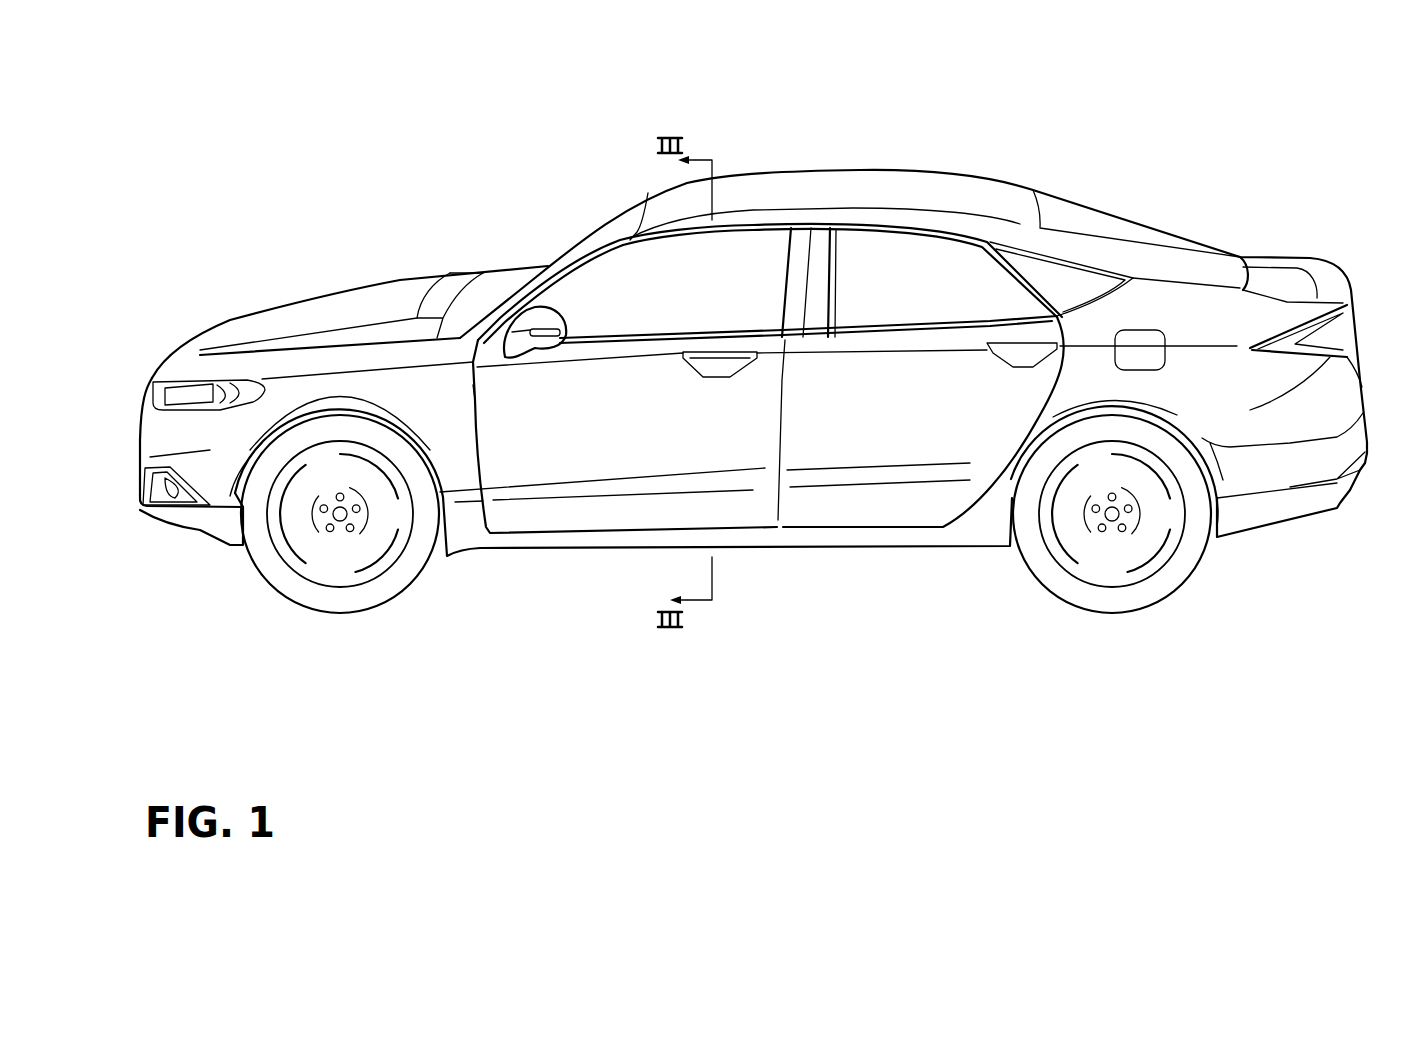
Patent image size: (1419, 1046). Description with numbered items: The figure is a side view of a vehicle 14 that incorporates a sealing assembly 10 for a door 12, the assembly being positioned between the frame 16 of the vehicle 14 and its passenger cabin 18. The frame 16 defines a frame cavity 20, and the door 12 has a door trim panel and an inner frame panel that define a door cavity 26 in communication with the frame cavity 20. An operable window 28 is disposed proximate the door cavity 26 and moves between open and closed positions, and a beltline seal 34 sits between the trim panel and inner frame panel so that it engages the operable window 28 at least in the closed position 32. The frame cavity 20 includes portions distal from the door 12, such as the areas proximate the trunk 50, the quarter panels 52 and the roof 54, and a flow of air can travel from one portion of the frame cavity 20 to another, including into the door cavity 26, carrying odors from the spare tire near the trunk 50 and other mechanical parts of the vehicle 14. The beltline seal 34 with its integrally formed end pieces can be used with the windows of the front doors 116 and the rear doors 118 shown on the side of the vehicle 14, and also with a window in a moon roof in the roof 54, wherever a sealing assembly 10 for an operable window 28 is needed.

The sealing assembly 10 is at (732, 322).
The door 12 is at (577, 503).
The vehicle 14 is at (1100, 190).
The frame 16 is at (1247, 470).
The passenger cabin 18 is at (683, 263).
The frame cavity 20 is at (1200, 333).
The door cavity 26 is at (537, 439).
The operable window 28 is at (585, 325).
The closed position 32 is at (640, 273).
The beltline seal 34 is at (607, 287).
The trunk 50 is at (1287, 315).
The quarter panels 52 is at (1253, 410).
The roof 54 is at (993, 197).
The front doors 116 is at (497, 403).
The rear doors 118 is at (900, 447).